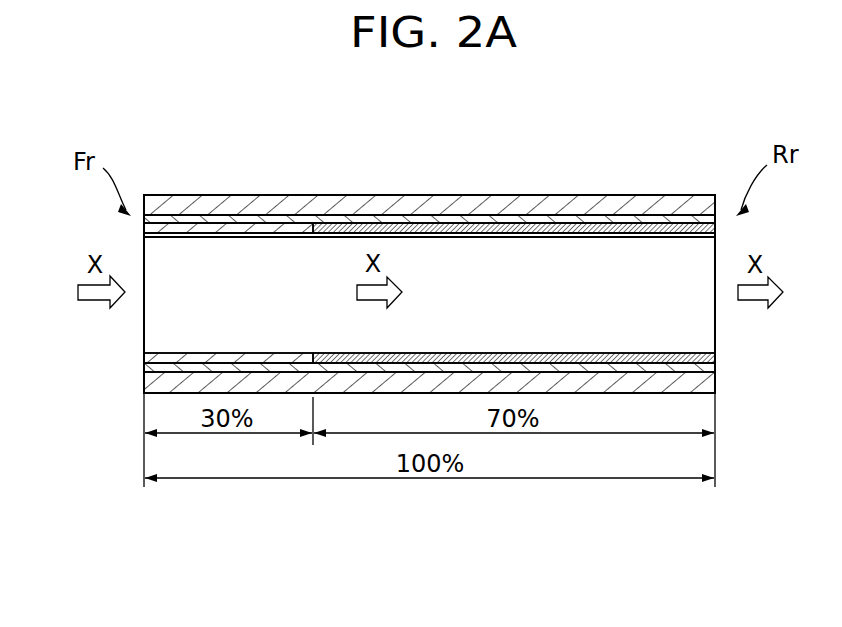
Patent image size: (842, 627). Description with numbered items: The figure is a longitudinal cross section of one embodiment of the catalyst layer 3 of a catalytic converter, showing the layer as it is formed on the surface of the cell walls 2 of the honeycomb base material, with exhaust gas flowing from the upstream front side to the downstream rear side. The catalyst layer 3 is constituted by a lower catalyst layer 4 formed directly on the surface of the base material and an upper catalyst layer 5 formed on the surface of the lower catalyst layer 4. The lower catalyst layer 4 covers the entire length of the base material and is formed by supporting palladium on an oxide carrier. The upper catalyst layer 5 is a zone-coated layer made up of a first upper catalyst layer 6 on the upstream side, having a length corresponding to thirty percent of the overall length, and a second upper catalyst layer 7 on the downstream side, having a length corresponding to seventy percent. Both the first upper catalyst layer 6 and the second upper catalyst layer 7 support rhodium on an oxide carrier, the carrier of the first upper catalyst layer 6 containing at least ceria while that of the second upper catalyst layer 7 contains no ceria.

The cell walls 2 is at (285, 205).
The catalyst layer 3 is at (382, 112).
The lower catalyst layer 4 is at (560, 220).
The upper catalyst layer 5 is at (345, 150).
The first upper catalyst layer 6 is at (300, 230).
The second upper catalyst layer 7 is at (433, 232).